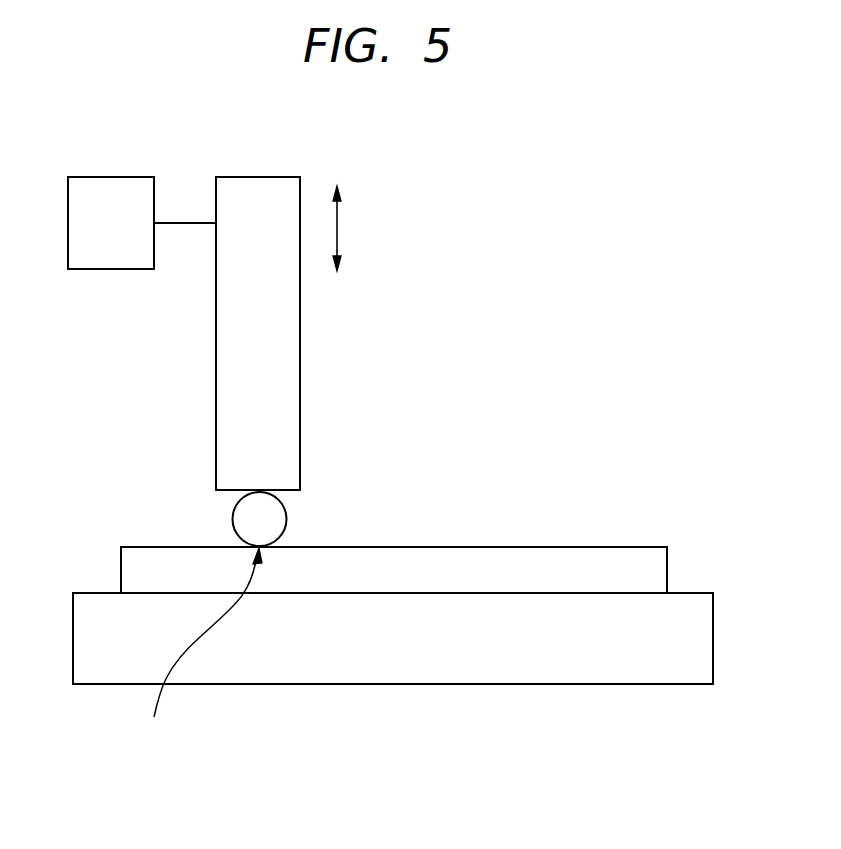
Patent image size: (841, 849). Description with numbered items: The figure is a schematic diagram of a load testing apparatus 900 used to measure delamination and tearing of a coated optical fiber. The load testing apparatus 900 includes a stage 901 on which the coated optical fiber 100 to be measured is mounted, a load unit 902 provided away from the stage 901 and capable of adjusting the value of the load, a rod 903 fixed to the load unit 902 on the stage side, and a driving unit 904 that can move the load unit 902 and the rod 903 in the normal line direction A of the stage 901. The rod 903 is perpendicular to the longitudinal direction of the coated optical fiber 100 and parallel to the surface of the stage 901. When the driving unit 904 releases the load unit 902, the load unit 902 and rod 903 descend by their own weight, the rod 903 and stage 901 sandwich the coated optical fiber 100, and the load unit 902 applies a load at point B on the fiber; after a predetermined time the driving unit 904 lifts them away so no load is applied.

The load testing apparatus 900 is at (79, 124).
The load unit 902 is at (260, 195).
The rod 903 is at (278, 513).
The driving unit 904 is at (105, 257).
The coated optical fiber 100 is at (515, 562).
The stage 901 is at (469, 670).
The normal line direction of the stage A is at (337, 229).
The point on the coated optical fiber B is at (205, 647).